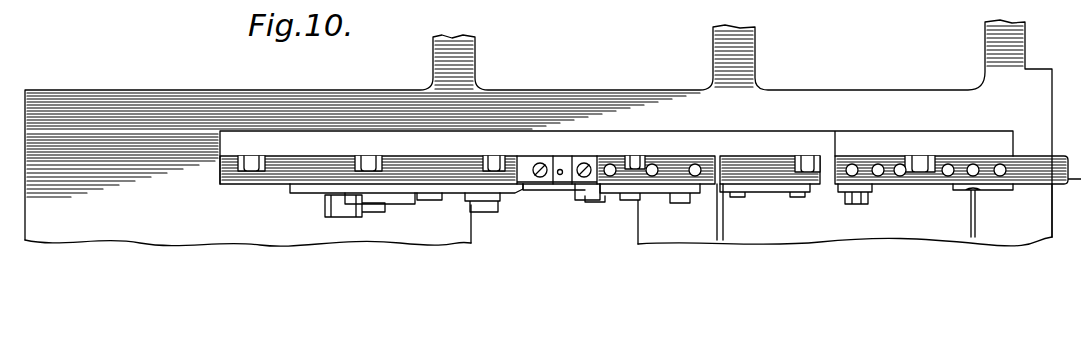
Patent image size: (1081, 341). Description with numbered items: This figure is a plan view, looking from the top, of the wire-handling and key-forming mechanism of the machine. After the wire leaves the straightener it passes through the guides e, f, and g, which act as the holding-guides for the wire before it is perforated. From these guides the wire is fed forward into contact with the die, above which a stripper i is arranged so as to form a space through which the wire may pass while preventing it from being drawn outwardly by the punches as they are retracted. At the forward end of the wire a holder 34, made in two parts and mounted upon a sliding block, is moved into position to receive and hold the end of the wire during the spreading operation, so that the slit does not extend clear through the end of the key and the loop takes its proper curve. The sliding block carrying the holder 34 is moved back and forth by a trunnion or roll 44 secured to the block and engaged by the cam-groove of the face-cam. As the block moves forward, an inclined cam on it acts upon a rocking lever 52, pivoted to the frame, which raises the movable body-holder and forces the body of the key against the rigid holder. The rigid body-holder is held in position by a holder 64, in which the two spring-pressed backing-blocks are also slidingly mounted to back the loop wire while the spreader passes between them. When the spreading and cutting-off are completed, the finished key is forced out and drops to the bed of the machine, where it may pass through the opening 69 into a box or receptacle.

The opening 69 is at (466, 44).
The holder 64 is at (560, 148).
The trunnion or roll 44 is at (325, 208).
The rocking lever 52 is at (398, 200).
The holder 34 is at (512, 198).
The stripper i is at (656, 192).
The guide g is at (772, 182).
The guide f is at (856, 186).
The guide e is at (1010, 182).